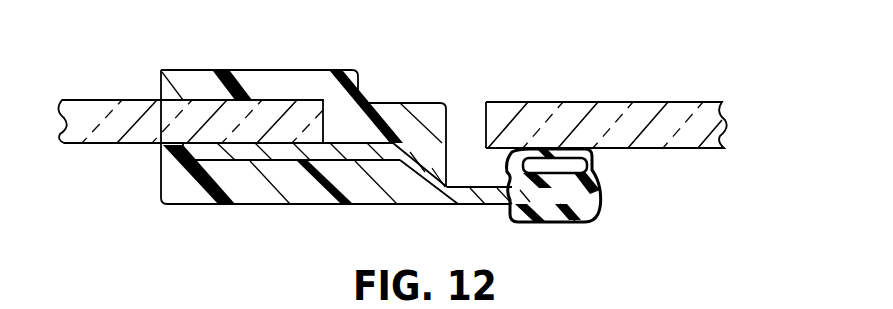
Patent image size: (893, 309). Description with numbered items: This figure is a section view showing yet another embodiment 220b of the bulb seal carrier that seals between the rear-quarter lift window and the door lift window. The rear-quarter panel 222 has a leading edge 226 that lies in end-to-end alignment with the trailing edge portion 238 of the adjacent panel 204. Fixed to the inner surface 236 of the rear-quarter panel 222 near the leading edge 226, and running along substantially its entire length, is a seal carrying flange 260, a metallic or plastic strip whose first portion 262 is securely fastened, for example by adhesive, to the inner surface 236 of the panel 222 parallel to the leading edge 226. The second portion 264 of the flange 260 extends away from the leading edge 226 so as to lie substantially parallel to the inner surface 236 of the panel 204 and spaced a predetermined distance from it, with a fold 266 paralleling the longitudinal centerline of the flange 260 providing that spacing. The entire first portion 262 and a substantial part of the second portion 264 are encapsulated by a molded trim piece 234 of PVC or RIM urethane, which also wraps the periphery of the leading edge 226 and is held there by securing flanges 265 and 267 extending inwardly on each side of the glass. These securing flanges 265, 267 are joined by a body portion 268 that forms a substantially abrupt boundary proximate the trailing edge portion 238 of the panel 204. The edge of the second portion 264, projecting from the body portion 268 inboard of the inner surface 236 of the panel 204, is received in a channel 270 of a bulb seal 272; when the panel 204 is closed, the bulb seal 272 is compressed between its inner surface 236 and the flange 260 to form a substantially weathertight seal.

The panel 204 is at (647, 102).
The bulb seal carrier embodiment 220b is at (155, 58).
The rear-quarter panel 222 is at (83, 98).
The leading edge 226 is at (293, 100).
The molded trim piece 234 is at (357, 73).
The inner surface 236 is at (124, 141).
The trailing edge portion 238 is at (484, 119).
The seal carrying flange 260 is at (288, 166).
The first portion 262 is at (240, 153).
The second portion 264 is at (505, 194).
The securing flange 265 is at (174, 82).
The fold 266 is at (436, 185).
The securing flange 267 is at (170, 181).
The body portion 268 is at (380, 110).
The channel 270 is at (562, 214).
The bulb seal 272 is at (612, 171).